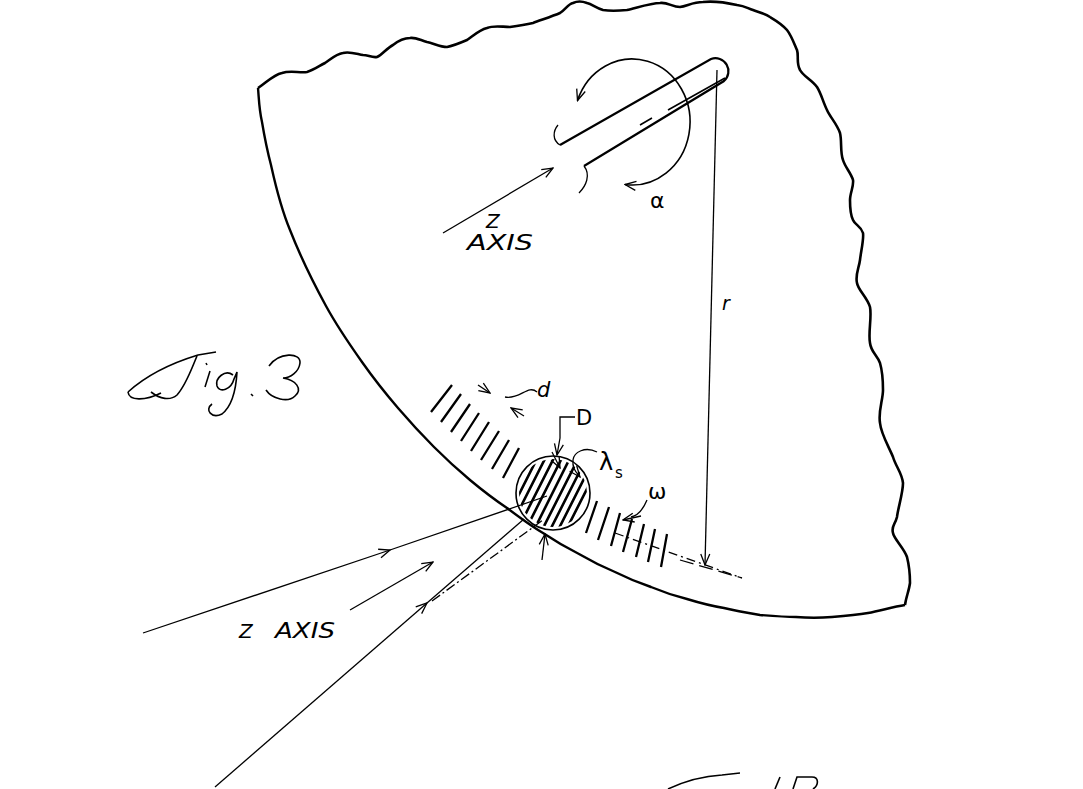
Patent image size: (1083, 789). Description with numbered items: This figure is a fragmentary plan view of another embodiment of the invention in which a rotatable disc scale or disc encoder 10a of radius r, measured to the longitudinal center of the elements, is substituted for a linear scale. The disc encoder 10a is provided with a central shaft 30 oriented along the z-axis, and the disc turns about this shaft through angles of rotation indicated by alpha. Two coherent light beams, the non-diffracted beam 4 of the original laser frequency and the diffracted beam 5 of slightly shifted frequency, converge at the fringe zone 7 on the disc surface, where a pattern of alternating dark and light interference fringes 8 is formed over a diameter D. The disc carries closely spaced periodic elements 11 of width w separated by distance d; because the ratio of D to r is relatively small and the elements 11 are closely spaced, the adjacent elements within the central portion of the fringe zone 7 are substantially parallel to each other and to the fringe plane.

The central shaft 30 is at (678, 82).
The elements 11 is at (446, 427).
The fringe zone 7 is at (568, 535).
The interference fringes 8 is at (522, 488).
The non-diffracted beam 4 is at (365, 557).
The diffracted beam 5 is at (398, 631).
The rotatable disc scale or disc encoder 10a is at (797, 587).